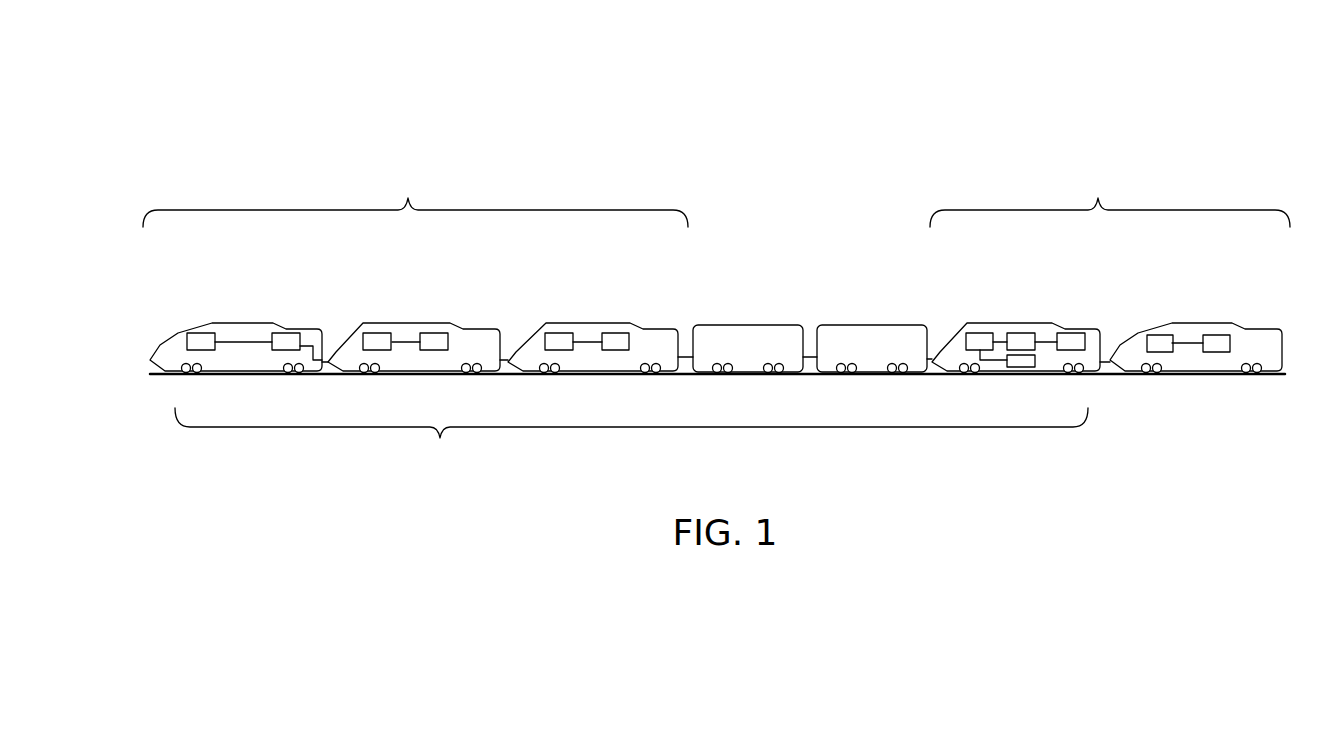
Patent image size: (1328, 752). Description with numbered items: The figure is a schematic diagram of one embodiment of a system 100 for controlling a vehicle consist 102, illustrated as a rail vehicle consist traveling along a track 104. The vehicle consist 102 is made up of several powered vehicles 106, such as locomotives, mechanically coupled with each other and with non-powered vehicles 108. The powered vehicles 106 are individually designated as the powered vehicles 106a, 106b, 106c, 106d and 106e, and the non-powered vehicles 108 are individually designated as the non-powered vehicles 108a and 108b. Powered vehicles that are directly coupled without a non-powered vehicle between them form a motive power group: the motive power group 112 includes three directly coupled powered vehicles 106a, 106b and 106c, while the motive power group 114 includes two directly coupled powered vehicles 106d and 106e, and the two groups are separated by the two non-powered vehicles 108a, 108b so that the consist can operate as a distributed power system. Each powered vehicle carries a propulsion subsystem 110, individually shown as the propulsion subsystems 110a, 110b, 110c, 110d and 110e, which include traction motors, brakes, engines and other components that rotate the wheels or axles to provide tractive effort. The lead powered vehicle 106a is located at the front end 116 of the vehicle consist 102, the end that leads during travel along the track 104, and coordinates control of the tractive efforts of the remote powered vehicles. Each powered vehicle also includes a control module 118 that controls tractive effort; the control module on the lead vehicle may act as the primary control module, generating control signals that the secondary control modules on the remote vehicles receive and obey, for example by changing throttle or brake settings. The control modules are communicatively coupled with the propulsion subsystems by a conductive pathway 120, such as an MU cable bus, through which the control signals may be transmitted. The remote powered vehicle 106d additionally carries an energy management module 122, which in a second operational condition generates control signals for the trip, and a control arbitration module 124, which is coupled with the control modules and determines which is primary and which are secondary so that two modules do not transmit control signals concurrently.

The system 100 is at (631, 439).
The vehicle consist 102 is at (1078, 80).
The track 104 is at (1190, 376).
The powered vehicle 106 is at (276, 310).
The lead powered vehicle 106a is at (313, 326).
The powered vehicle 106b is at (470, 325).
The powered vehicle 106c is at (645, 328).
The remote powered vehicle 106d is at (1092, 328).
The powered vehicle 106e is at (1263, 323).
The non-powered vehicle 108 is at (752, 308).
The non-powered vehicle 108a is at (775, 325).
The non-powered vehicle 108b is at (872, 325).
The propulsion subsystem 110 is at (172, 335).
The propulsion subsystem 110a is at (196, 333).
The propulsion subsystem 110b is at (388, 333).
The propulsion subsystem 110c is at (560, 333).
The propulsion subsystem 110d is at (978, 333).
The propulsion subsystem 110e is at (1175, 343).
The motive power group 112 is at (415, 198).
The motive power group 114 is at (1110, 198).
The front end 116 is at (135, 352).
The control module 118 is at (272, 350).
The conductive pathway 120 is at (503, 362).
The energy management module 122 is at (1020, 333).
The control arbitration module 124 is at (1063, 333).